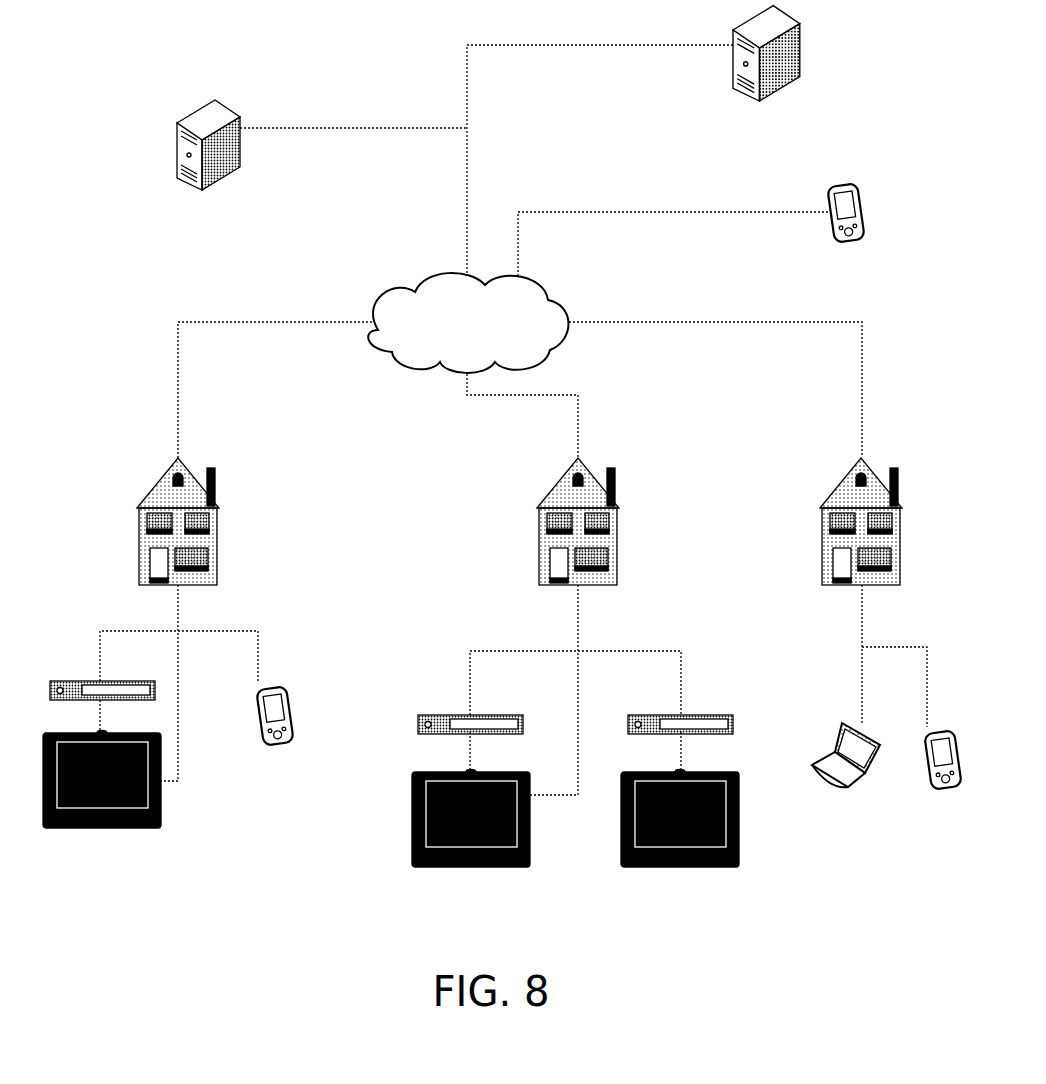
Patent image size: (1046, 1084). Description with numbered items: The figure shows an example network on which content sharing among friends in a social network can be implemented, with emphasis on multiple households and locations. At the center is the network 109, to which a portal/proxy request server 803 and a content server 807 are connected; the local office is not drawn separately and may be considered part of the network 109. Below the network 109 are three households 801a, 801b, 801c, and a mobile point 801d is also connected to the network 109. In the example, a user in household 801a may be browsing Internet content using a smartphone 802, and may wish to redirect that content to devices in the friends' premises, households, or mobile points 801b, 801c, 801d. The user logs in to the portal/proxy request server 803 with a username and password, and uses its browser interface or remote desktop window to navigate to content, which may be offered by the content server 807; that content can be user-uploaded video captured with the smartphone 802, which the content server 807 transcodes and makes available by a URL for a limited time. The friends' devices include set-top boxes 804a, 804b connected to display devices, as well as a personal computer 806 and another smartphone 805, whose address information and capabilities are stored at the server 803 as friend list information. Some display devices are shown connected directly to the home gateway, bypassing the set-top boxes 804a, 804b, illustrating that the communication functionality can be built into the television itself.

The portal/proxy request server 803 is at (207, 187).
The content server 807 is at (765, 80).
The mobile point 801d is at (845, 229).
The network 109 is at (468, 323).
The household 801a is at (218, 520).
The household 801b is at (537, 518).
The household 801c is at (820, 520).
The smartphone 802 is at (274, 732).
The set-top box 804a is at (432, 715).
The set-top box 804b is at (726, 715).
The smartphone 805 is at (943, 774).
The personal computer 806 is at (846, 768).